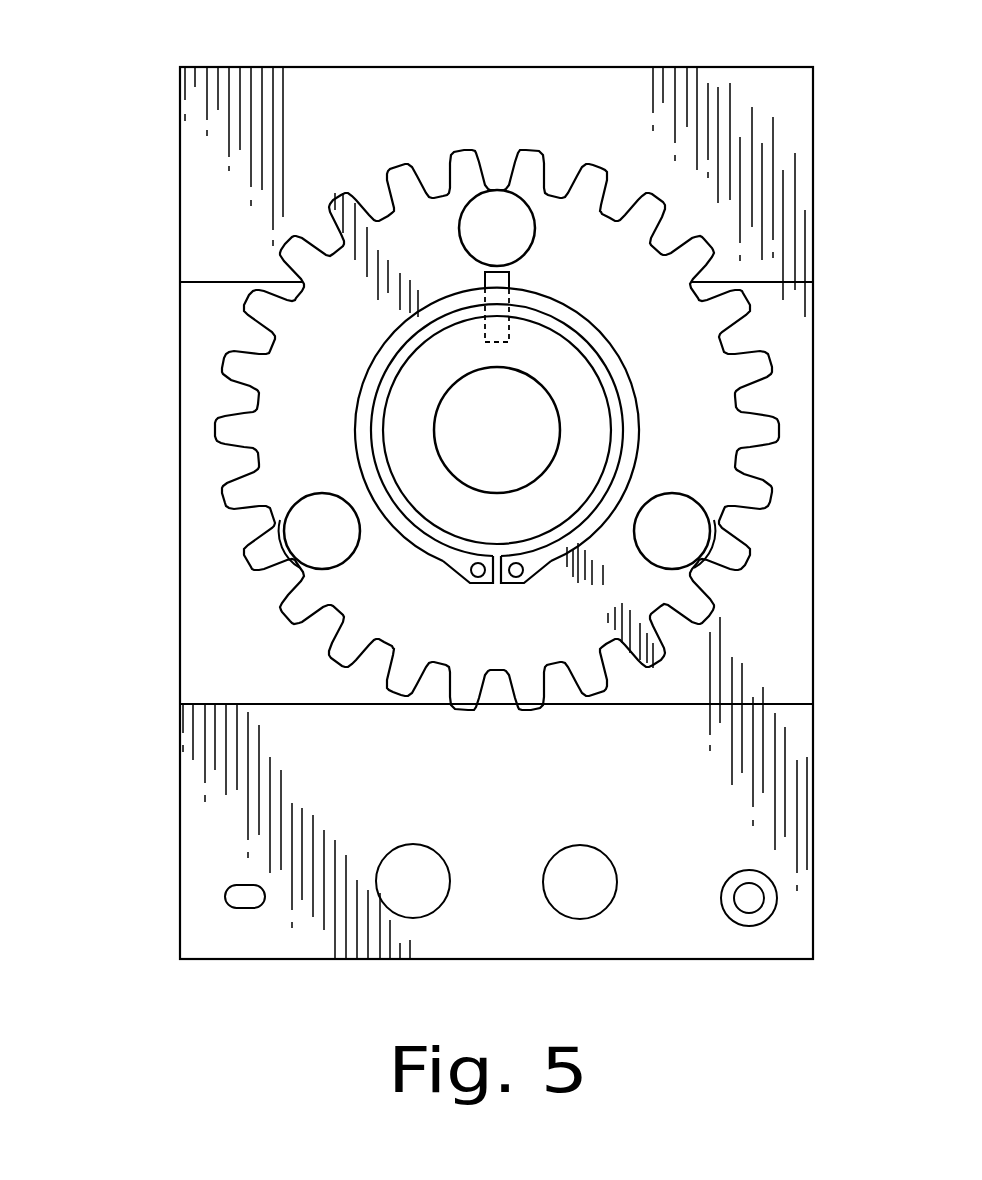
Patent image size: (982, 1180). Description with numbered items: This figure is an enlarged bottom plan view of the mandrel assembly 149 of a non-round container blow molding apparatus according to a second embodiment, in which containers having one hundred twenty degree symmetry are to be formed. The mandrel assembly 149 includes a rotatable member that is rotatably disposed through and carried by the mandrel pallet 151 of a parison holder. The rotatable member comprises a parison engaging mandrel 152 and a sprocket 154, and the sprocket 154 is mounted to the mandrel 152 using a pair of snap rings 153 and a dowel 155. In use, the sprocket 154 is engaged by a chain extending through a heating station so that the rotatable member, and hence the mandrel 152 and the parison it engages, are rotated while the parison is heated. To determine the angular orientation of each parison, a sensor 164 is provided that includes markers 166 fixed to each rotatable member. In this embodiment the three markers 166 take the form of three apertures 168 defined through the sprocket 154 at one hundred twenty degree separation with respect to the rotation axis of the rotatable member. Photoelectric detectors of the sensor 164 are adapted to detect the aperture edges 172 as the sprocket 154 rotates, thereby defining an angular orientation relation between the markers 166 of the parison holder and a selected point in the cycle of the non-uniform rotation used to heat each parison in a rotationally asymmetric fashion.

The mandrel assembly 149 is at (127, 252).
The mandrel pallet 151 is at (774, 68).
The parison engaging mandrel 152 is at (587, 387).
The snap rings 153 is at (375, 352).
The sprocket 154 is at (768, 355).
The dowel 155 is at (510, 280).
The sensor 164 is at (533, 208).
The markers 166 is at (282, 560).
The apertures 168 is at (497, 190).
The aperture edges 172 is at (462, 212).